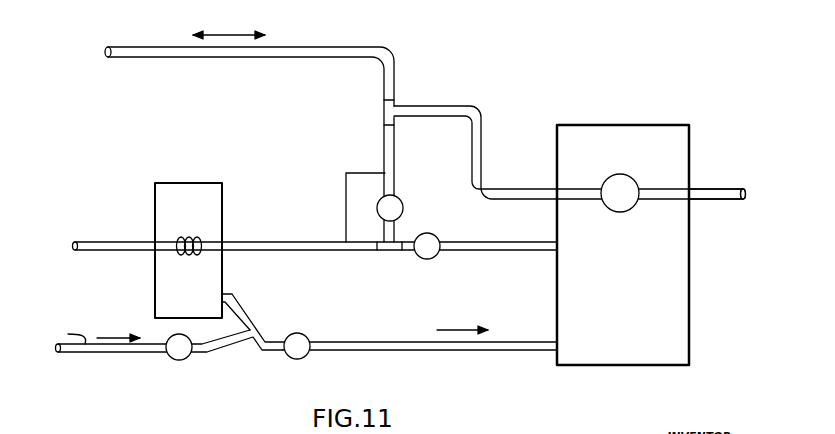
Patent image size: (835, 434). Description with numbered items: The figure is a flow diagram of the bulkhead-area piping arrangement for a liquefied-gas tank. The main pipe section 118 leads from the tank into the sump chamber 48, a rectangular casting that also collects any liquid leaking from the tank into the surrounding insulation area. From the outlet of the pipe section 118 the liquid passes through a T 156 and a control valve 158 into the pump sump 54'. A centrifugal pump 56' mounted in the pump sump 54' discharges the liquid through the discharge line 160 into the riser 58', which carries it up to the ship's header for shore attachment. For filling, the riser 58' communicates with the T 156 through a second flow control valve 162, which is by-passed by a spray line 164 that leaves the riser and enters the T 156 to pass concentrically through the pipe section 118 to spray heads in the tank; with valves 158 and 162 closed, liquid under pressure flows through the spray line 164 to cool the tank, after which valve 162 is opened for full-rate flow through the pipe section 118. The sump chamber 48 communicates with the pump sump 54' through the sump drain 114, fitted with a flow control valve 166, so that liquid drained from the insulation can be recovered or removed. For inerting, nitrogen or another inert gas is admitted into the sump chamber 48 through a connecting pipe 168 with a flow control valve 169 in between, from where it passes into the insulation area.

The riser 58' is at (249, 136).
The discharge line 160 is at (481, 147).
The flow control valve 162 is at (404, 203).
The spray line 164 is at (358, 172).
The pipe section 118 is at (98, 255).
The sump chamber 48 is at (222, 207).
The T 156 is at (392, 252).
The control valve 158 is at (438, 257).
The pump sump 54' is at (651, 245).
The pump 56' is at (632, 179).
The connecting pipe 168 is at (131, 354).
The sump drain 114 is at (448, 352).
The flow control valve 169 is at (180, 361).
The flow control valve 166 is at (308, 338).